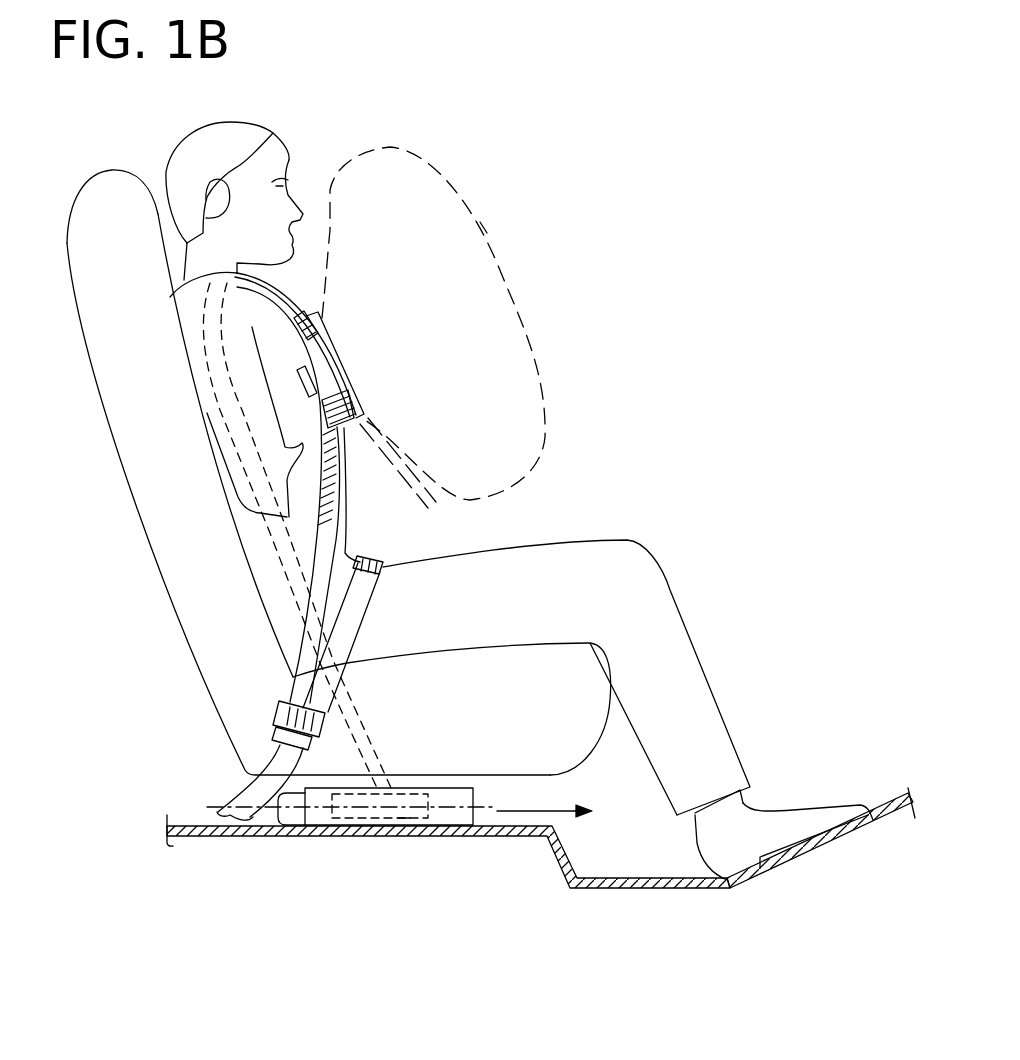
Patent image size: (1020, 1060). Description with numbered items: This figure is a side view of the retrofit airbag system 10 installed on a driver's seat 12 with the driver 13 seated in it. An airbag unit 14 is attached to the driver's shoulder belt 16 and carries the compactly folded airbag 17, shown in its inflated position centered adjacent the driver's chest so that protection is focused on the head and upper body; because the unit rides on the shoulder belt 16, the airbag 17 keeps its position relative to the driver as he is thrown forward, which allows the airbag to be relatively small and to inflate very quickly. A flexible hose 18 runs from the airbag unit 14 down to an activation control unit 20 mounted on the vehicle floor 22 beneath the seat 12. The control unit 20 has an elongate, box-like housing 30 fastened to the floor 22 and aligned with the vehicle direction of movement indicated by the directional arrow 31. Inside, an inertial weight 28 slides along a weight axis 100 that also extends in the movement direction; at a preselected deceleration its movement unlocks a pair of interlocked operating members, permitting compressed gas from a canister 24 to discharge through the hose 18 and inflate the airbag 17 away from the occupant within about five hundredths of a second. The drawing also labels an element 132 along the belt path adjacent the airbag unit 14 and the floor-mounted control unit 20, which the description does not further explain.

The retrofit airbag system 10 is at (496, 149).
The driver's seat 12 is at (160, 607).
The driver 13 is at (283, 132).
The airbag unit 14 is at (340, 350).
The shoulder belt 16 is at (313, 541).
The airbag 17 is at (483, 228).
The flexible hose 18 is at (203, 419).
The activation control unit 20 is at (442, 845).
The vehicle floor 22 is at (193, 823).
The canister 24 is at (290, 830).
The inertial weight 28 is at (407, 837).
The housing 30 is at (437, 788).
The directional arrow 31 is at (520, 812).
The weight axis 100 is at (377, 820).
The lap belt portion 132 is at (343, 380).